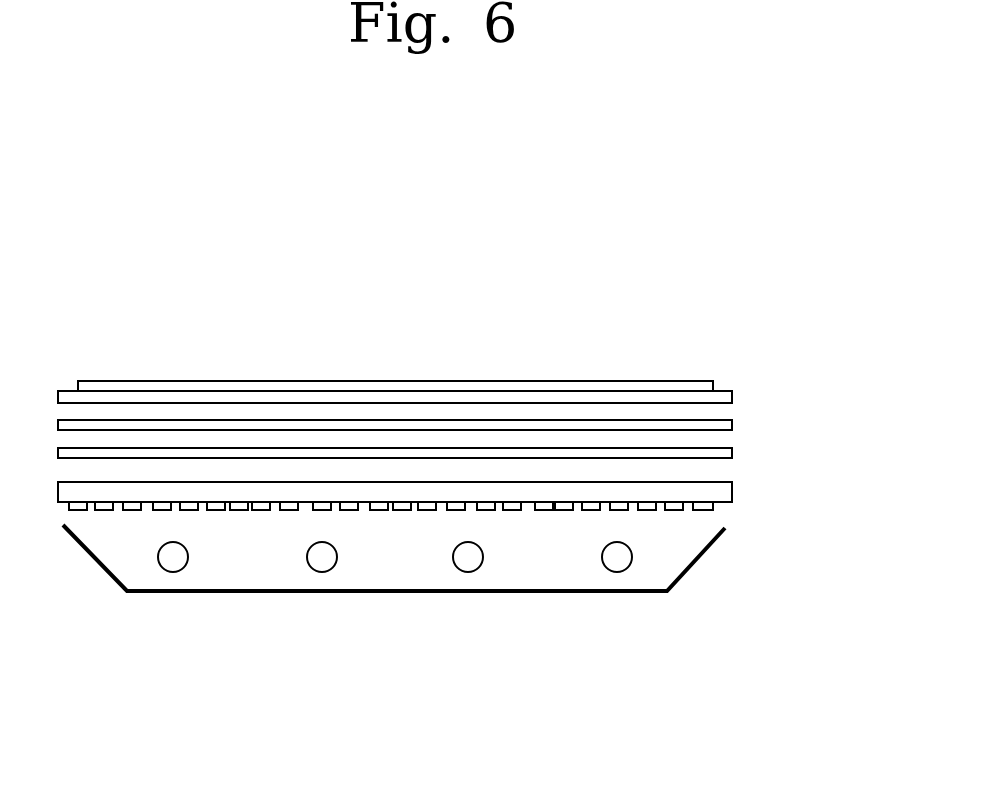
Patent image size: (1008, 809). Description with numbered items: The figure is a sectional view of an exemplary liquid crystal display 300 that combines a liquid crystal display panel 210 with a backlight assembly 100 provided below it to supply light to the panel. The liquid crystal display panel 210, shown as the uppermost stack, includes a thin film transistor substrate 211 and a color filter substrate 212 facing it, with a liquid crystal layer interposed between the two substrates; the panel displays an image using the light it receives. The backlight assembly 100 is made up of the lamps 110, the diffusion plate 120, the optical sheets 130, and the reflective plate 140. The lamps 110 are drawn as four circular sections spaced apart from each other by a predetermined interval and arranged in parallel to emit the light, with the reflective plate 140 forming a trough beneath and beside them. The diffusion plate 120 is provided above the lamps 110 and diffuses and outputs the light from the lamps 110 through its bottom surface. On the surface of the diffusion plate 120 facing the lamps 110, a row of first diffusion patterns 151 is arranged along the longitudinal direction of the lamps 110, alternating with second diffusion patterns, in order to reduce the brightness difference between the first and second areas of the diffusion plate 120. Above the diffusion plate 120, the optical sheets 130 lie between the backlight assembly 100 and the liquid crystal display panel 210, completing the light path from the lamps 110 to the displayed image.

The display device 300 is at (755, 274).
The liquid crystal display panel 210 is at (841, 340).
The color filter substrate 212 is at (690, 382).
The thin film transistor substrate 211 is at (733, 397).
The backlight assembly 100 is at (841, 425).
The optical sheets 130 is at (745, 420).
The diffusion plate 120 is at (733, 490).
The first diffusion patterns 151 is at (677, 510).
The reflective plate 140 is at (698, 560).
The lamps 110 is at (617, 562).